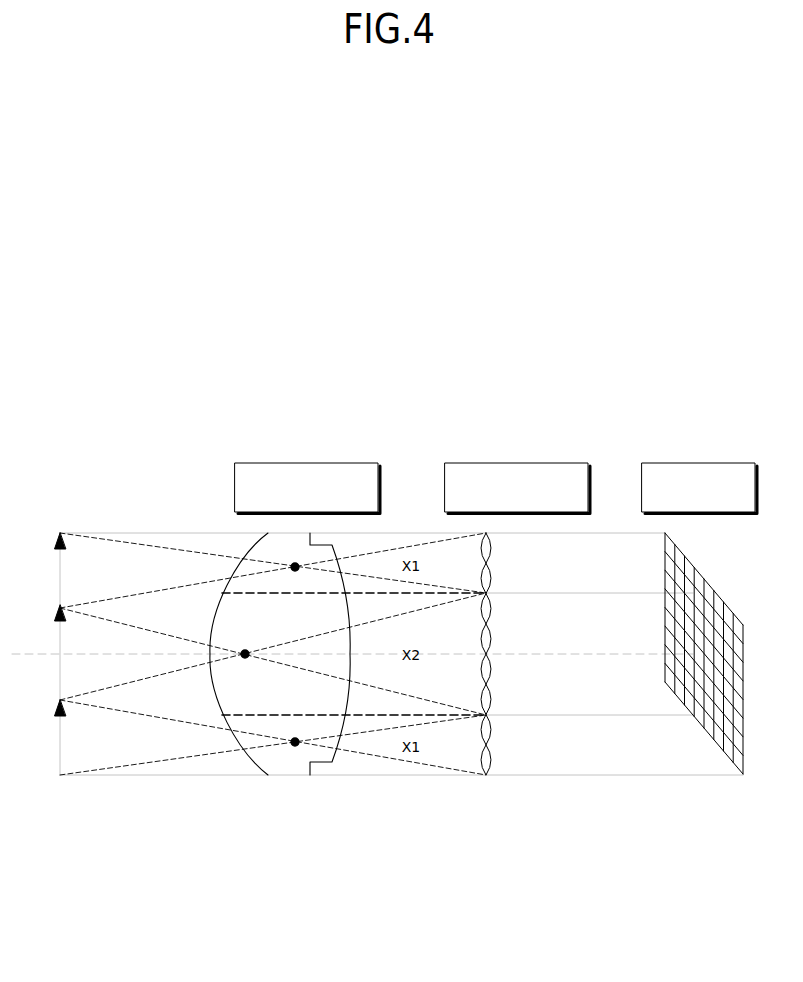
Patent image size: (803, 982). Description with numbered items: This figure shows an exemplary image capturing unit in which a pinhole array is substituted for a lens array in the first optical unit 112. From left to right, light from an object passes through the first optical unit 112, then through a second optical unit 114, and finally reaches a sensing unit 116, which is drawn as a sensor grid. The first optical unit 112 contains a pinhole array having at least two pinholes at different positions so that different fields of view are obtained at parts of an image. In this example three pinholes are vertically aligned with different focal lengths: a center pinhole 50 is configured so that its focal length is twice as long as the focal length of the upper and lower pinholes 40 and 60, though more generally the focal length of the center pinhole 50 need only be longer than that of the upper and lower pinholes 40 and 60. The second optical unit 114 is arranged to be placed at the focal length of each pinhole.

The upper pinhole 40 is at (295, 567).
The center pinhole 50 is at (245, 654).
The lower pinhole 60 is at (295, 742).
The first optical unit 112 is at (291, 463).
The second optical unit 114 is at (501, 463).
The sensing unit 116 is at (698, 463).